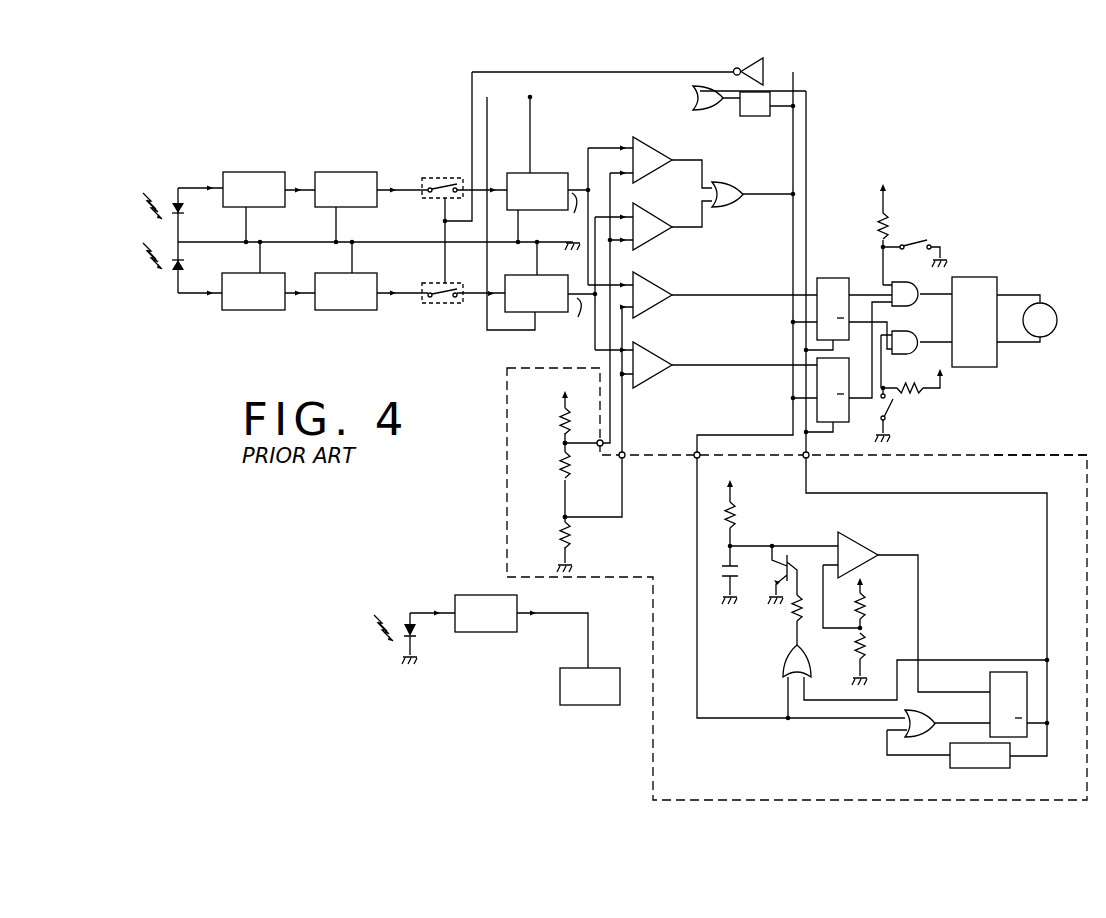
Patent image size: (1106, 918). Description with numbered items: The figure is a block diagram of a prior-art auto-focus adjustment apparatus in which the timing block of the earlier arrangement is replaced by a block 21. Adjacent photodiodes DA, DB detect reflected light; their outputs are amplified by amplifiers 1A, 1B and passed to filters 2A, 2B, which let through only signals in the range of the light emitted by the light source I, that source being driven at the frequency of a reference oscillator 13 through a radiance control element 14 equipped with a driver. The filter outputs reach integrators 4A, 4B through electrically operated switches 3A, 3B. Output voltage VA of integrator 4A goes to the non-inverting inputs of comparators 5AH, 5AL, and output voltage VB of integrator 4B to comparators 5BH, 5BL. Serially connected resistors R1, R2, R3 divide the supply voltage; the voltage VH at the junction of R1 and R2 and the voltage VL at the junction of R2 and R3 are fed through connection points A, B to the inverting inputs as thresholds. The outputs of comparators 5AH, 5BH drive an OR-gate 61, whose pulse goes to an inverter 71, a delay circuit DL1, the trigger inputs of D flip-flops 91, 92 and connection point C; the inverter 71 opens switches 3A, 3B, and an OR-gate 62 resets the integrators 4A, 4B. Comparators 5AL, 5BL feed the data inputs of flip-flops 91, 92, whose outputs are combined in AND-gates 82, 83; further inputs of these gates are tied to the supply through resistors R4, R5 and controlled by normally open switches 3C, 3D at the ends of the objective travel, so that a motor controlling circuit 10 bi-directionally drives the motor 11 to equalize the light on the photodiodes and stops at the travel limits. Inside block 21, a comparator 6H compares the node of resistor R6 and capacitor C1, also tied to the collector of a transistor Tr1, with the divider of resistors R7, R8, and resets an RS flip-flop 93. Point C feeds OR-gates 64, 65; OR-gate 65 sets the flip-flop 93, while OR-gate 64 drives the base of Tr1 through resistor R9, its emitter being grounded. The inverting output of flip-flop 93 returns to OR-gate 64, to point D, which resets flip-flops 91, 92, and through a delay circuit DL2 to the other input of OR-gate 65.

The amplifier 1A is at (247, 172).
The amplifier 1B is at (248, 310).
The filter 2A is at (333, 172).
The filter 2B is at (340, 310).
The electrically operated switch 3A is at (438, 178).
The electrically operated switch 3B is at (452, 303).
The switch 3C is at (918, 241).
The switch 3D is at (894, 406).
The integrator 4A is at (536, 173).
The integrator 4B is at (551, 314).
The comparator 5AH is at (667, 154).
The comparator 5BH is at (667, 236).
The comparator 5AL is at (667, 290).
The comparator 5BL is at (667, 358).
The comparator 6H is at (869, 545).
The motor controlling circuit 10 is at (980, 277).
The motor 11 is at (1047, 305).
The reference oscillator 13 is at (588, 705).
The radiance control element 14 is at (486, 632).
The block 21 is at (994, 455).
The OR-gate 61 is at (736, 191).
The OR-gate 62 is at (703, 110).
The OR-gate 64 is at (783, 660).
The OR-gate 65 is at (937, 722).
The inverter 71 is at (758, 58).
The AND-gate 82 is at (897, 282).
The AND-gate 83 is at (912, 332).
The D flip-flop 91 is at (835, 278).
The D flip-flop 92 is at (840, 422).
The RS flip-flop 93 is at (990, 688).
The delay circuit DL1 is at (755, 117).
The delay circuit DL2 is at (953, 764).
The photodiode DA is at (177, 206).
The photodiode DB is at (177, 257).
The light source I is at (399, 638).
The resistor R1 is at (577, 412).
The resistor R2 is at (577, 469).
The resistor R3 is at (577, 534).
The resistor R4 is at (870, 234).
The resistor R5 is at (913, 380).
The resistor R6 is at (743, 513).
The resistor R7 is at (872, 603).
The resistor R8 is at (871, 659).
The resistor R9 is at (785, 620).
The capacitor C1 is at (720, 575).
The transistor Tr1 is at (771, 575).
The output voltage VA is at (571, 216).
The output voltage VB is at (579, 320).
The threshold voltage VH is at (552, 446).
The threshold voltage VL is at (552, 517).
The connection point A is at (592, 436).
The connection point B is at (627, 447).
The connection point C is at (690, 446).
The connection point D is at (813, 447).